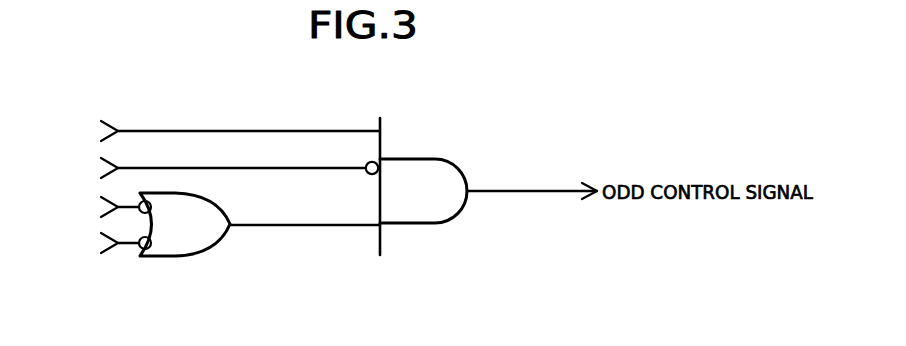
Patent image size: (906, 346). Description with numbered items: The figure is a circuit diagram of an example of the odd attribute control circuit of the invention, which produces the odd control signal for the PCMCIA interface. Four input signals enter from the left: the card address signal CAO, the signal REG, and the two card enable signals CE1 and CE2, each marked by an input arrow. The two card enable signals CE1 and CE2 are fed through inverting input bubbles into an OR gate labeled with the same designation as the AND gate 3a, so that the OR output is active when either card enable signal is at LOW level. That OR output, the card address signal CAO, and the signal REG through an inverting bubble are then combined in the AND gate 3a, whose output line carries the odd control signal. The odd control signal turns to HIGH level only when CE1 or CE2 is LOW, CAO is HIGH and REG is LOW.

The AND gate 3a is at (452, 160).
The card address signal CAO is at (207, 130).
The REG signal REG is at (206, 166).
The card enable signal CE1 is at (93, 207).
The card enable signal CE2 is at (93, 243).